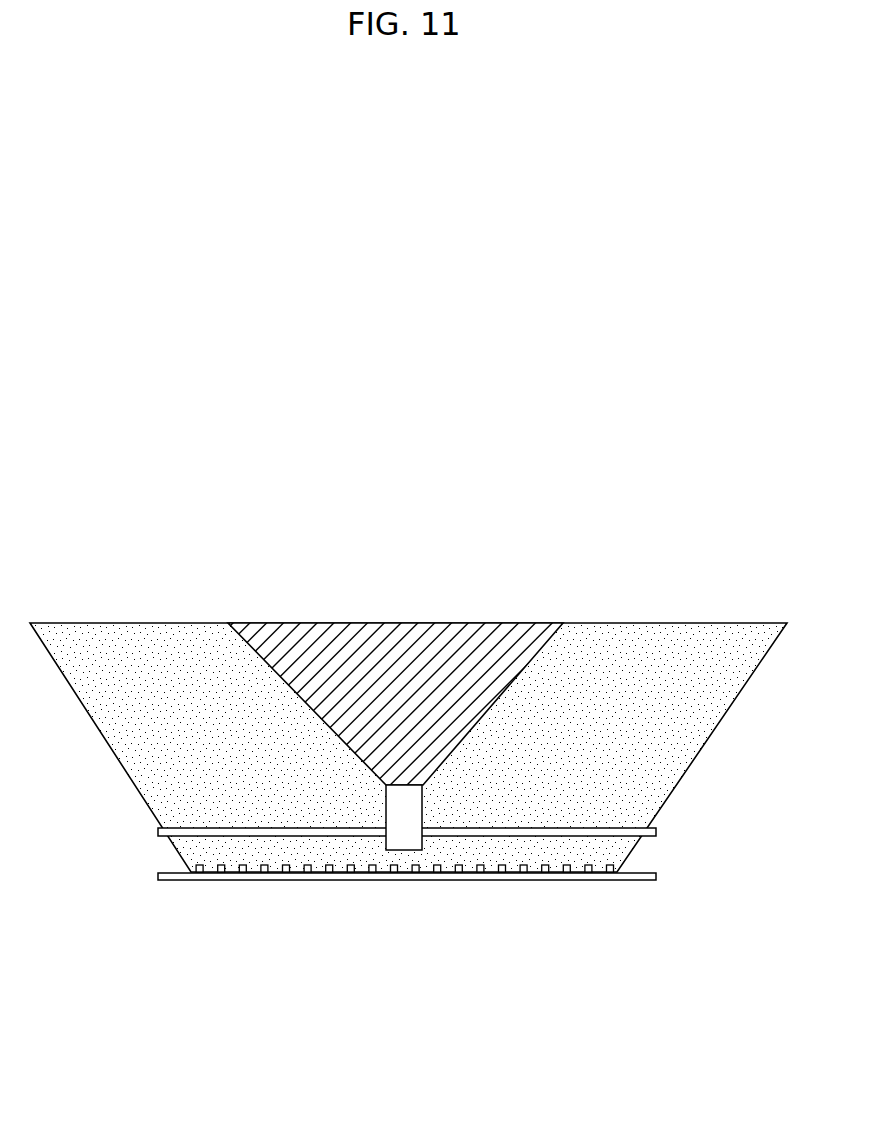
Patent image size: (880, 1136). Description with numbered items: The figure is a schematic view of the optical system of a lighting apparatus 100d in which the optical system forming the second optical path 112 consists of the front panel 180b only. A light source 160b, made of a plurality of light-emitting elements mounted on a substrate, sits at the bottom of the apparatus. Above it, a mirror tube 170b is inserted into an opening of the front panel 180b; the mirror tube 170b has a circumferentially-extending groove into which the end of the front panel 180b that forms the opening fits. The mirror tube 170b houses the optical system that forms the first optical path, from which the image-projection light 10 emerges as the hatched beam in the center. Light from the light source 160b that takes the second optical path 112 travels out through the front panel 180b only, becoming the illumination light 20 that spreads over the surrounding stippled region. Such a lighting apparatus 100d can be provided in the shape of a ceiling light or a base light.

The lighting apparatus 100d is at (684, 562).
The image-projection light 10 is at (495, 637).
The illumination light 20 is at (697, 643).
The second optical path 112 is at (520, 850).
The light source 160b is at (653, 871).
The mirror tube 170b is at (422, 802).
The front panel 180b is at (656, 833).